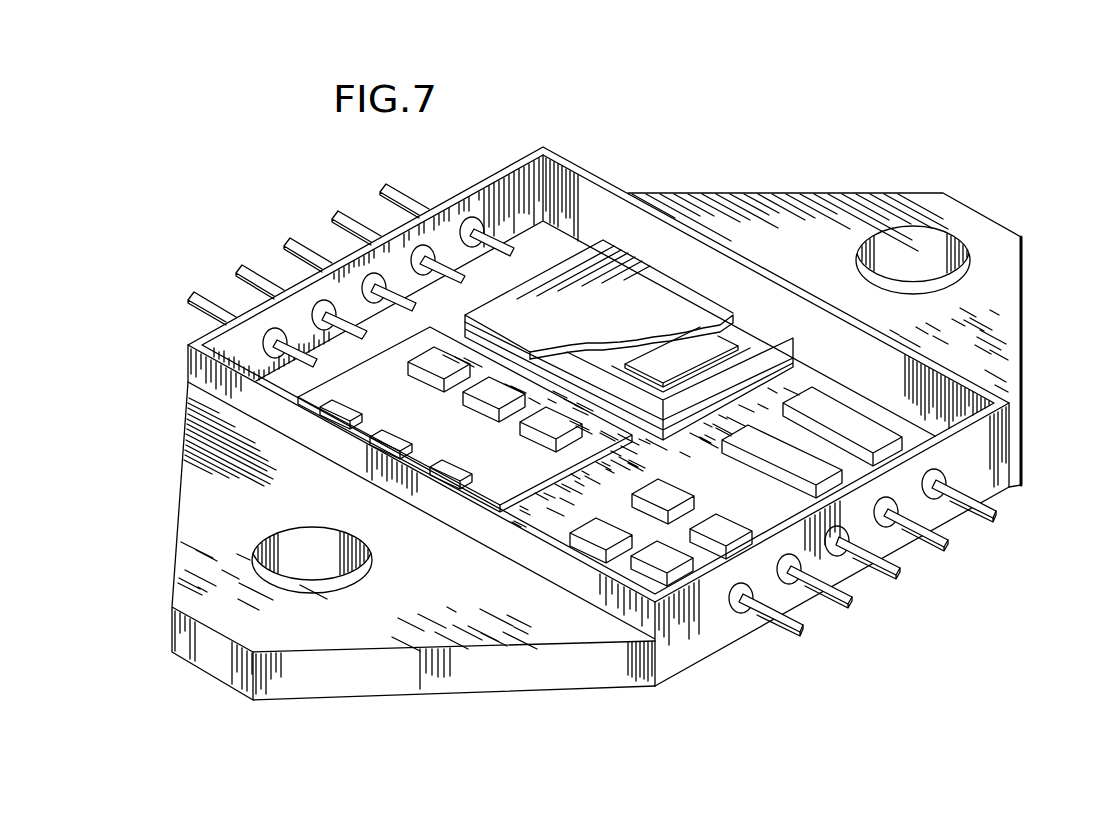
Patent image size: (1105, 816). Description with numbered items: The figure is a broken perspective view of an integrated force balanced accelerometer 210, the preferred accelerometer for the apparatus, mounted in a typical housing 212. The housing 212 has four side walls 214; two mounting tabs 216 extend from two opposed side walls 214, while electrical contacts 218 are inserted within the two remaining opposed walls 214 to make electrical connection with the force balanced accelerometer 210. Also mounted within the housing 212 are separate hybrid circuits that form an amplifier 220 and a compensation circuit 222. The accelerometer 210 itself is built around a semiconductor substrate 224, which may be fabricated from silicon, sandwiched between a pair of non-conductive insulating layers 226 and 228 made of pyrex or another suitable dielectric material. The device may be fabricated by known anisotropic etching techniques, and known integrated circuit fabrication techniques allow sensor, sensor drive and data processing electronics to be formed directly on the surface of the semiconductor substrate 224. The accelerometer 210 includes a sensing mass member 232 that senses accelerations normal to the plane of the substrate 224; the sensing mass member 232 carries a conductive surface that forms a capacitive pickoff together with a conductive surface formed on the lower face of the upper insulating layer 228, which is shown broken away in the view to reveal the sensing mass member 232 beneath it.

The integrated force balanced accelerometer 210 is at (610, 230).
The housing 212 is at (480, 180).
The side walls 214 is at (1021, 430).
The mounting tabs 216 is at (725, 202).
The electrical contacts 218 is at (928, 545).
The amplifier 220 is at (493, 490).
The compensation circuit 222 is at (768, 520).
The semiconductor substrate 224 is at (752, 366).
The non-conductive insulating layer 226 is at (793, 365).
The non-conductive insulating layer 228 is at (677, 295).
The sensing mass member 232 is at (722, 348).